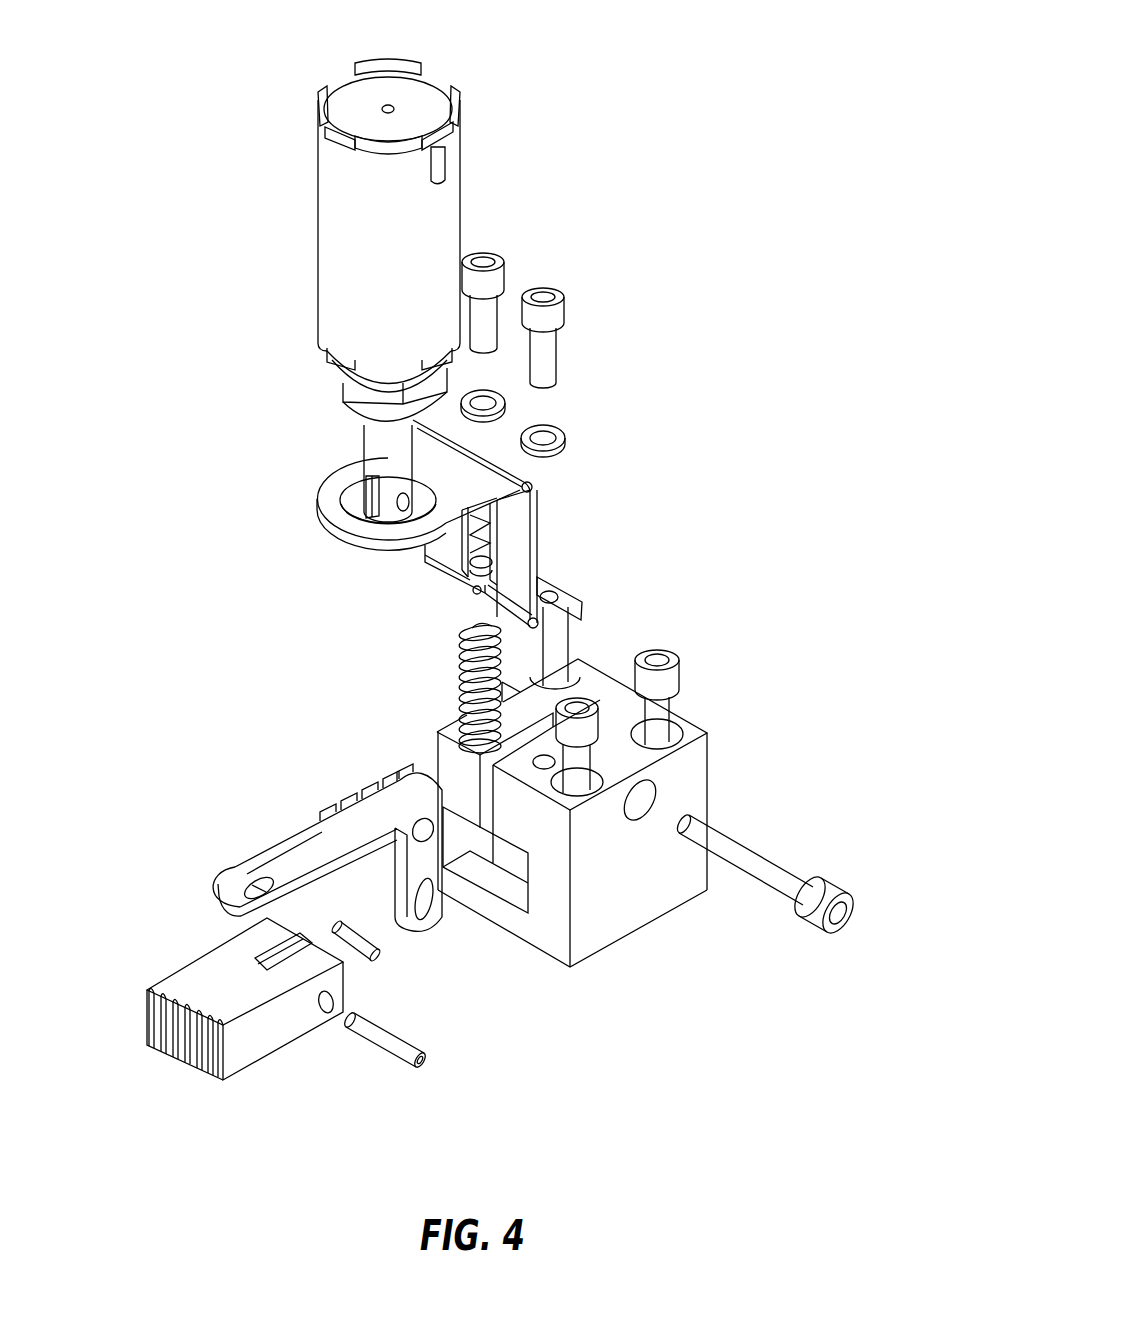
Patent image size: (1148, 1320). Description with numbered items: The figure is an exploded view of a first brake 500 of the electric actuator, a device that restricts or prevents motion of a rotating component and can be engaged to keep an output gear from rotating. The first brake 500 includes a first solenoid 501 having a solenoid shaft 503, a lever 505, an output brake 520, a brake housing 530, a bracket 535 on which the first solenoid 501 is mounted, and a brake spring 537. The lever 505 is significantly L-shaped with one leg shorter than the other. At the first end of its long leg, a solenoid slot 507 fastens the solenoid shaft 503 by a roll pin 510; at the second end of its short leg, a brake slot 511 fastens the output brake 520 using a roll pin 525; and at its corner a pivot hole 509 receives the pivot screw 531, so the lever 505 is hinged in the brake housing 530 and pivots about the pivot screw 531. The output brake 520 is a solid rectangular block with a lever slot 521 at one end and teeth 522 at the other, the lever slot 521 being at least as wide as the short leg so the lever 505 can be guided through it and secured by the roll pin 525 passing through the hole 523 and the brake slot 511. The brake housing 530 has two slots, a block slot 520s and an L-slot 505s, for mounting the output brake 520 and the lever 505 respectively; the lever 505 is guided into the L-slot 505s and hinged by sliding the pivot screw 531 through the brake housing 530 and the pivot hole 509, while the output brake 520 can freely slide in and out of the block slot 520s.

The first brake 500 is at (718, 66).
The first solenoid 501 is at (462, 100).
The solenoid shaft 503 is at (372, 453).
The bracket 535 is at (534, 535).
The brake spring 537 is at (458, 670).
The lever 505 is at (300, 819).
The L-slot 505s is at (480, 780).
The solenoid slot 507 is at (263, 877).
The pivot hole 509 is at (414, 815).
The brake slot 511 is at (418, 920).
The roll pin 510 is at (368, 955).
The output brake 520 is at (195, 959).
The block slot 520s is at (513, 898).
The lever slot 521 is at (287, 950).
The teeth 522 is at (180, 1055).
The hole 523 is at (323, 1013).
The roll pin 525 is at (425, 1048).
The brake housing 530 is at (700, 756).
The pivot screw 531 is at (763, 880).